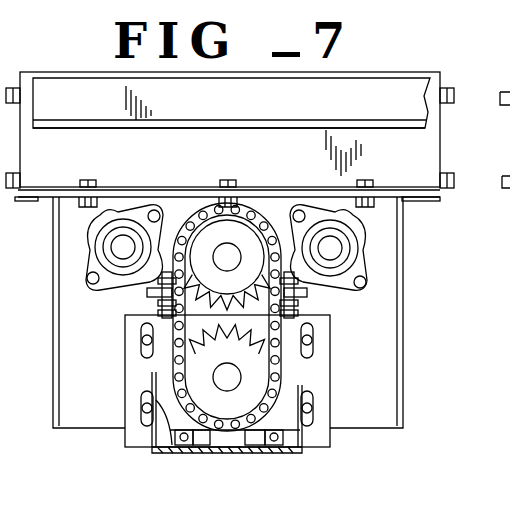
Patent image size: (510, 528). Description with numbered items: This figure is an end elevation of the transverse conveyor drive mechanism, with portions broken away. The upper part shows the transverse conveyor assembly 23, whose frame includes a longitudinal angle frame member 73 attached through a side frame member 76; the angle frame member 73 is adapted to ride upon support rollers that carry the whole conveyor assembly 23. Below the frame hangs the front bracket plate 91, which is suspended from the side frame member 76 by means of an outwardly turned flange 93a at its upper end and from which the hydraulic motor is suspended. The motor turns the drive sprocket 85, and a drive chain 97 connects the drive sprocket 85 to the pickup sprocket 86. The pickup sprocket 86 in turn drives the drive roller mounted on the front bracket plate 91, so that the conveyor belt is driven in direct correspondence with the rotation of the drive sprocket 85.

The transverse conveyor assembly 23 is at (93, 68).
The longitudinal angle frame member 73 is at (423, 96).
The side frame member 76 is at (290, 165).
The front bracket plate 91 is at (390, 335).
The drive sprocket 85 is at (262, 373).
The pickup sprocket 86 is at (164, 303).
The drive chain 97 is at (170, 363).
The outwardly turned flange 93a is at (159, 200).